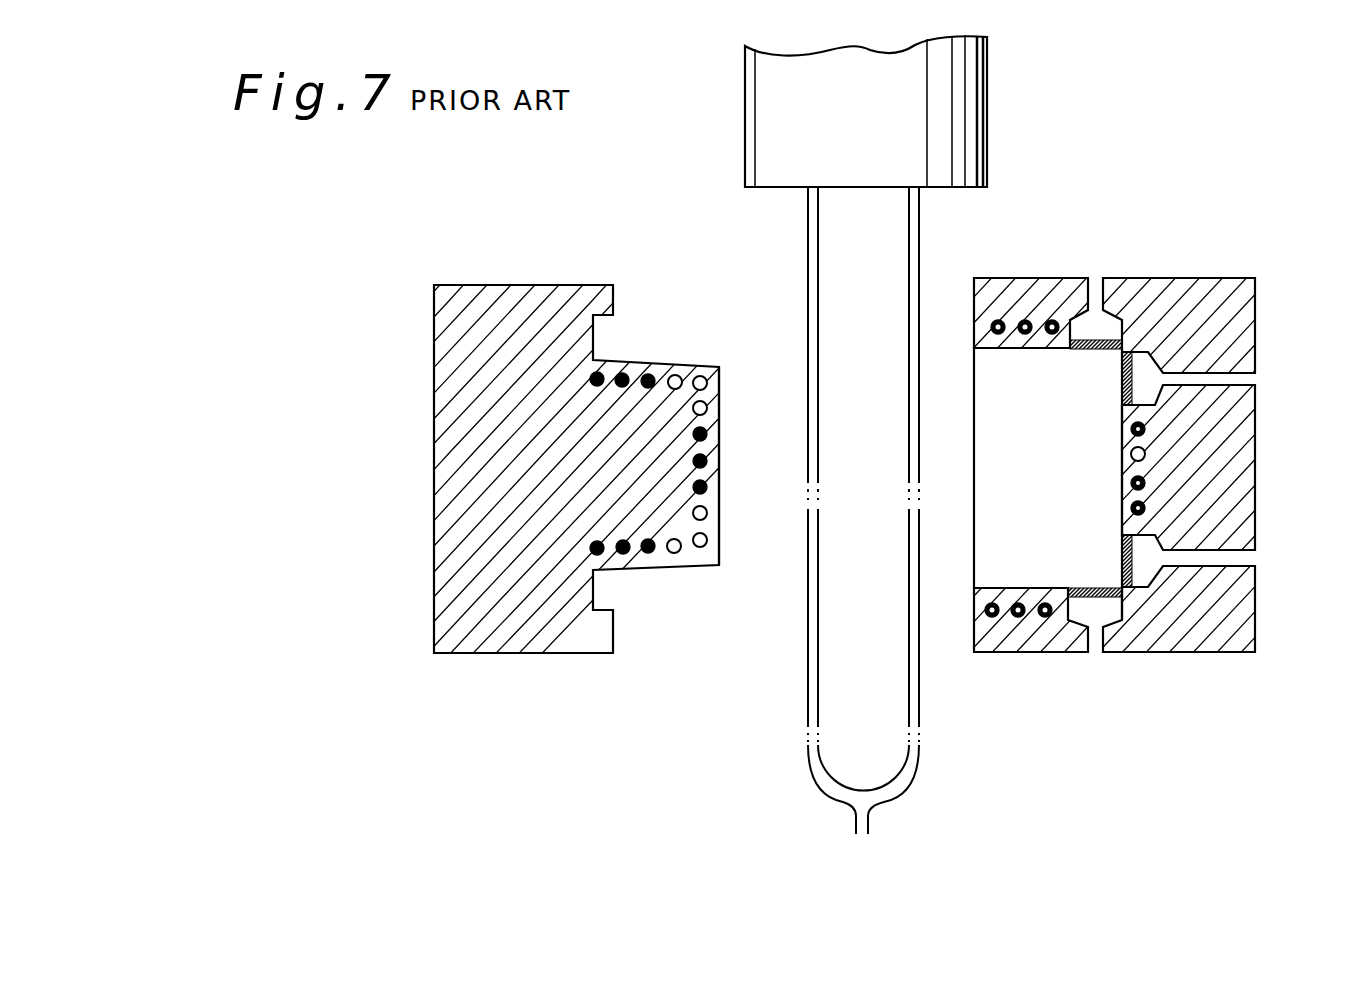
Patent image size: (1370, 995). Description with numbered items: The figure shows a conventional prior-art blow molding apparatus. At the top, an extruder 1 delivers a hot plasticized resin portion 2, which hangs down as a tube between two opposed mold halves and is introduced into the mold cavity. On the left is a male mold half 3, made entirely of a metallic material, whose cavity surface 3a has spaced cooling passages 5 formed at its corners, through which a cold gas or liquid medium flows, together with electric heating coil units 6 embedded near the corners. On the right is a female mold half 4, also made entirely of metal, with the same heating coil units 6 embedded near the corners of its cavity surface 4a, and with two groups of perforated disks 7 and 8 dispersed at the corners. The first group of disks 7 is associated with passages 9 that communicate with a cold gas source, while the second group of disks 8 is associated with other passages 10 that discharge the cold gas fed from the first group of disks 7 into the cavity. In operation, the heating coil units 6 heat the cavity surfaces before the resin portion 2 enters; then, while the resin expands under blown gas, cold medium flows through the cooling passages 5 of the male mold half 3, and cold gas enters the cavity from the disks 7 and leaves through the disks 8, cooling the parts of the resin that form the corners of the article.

The extruder 1 is at (958, 138).
The resin portion 2 is at (883, 750).
The male mold half 3 is at (557, 660).
The cavity surface 3a is at (720, 430).
The female mold half 4 is at (1207, 662).
The cavity surface 4a is at (1120, 432).
The cooling passages 5 is at (680, 372).
The electric heating coil units 6 is at (603, 372).
The first group of perforated disks 7 is at (1087, 352).
The second group of perforated disks 8 is at (1119, 387).
The passages 9 is at (1098, 298).
The passages 10 is at (1240, 377).